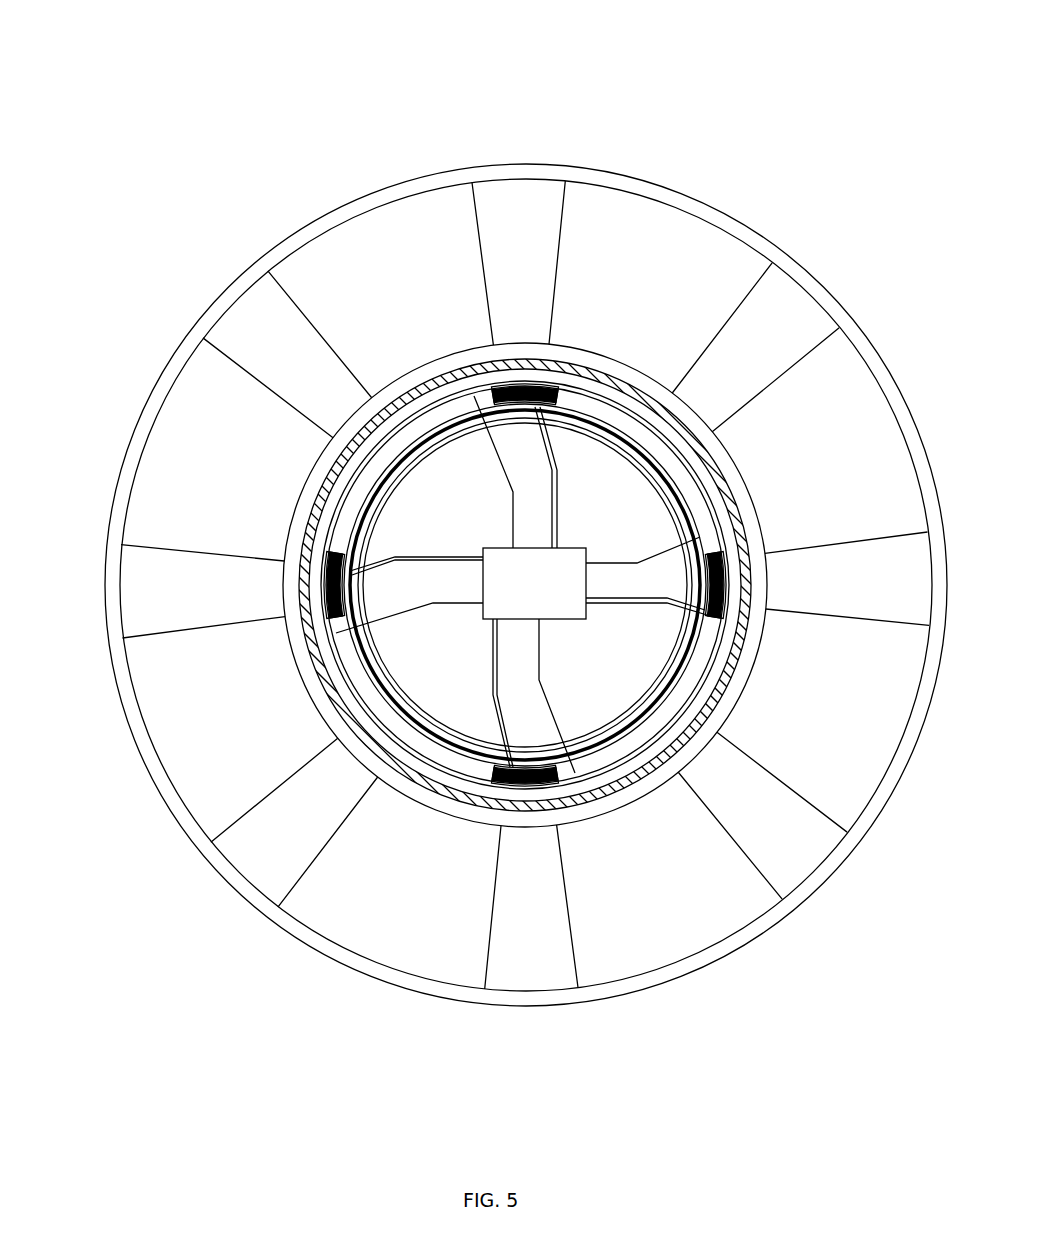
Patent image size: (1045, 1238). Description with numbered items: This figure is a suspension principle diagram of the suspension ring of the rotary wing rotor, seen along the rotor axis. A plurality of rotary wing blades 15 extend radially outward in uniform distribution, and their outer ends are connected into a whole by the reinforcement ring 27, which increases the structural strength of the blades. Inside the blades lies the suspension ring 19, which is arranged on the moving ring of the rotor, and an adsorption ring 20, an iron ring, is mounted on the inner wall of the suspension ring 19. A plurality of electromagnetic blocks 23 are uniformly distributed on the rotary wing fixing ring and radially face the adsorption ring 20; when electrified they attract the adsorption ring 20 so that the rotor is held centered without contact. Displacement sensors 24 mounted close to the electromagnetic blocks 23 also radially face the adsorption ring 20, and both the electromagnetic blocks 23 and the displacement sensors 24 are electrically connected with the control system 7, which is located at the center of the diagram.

The control system 7 is at (532, 588).
The rotary wing blades 15 is at (520, 243).
The suspension ring 19 is at (312, 518).
The adsorption ring 20 is at (320, 455).
The electromagnetic blocks 23 is at (322, 612).
The displacement sensors 24 is at (700, 548).
The reinforcement ring 27 is at (340, 212).